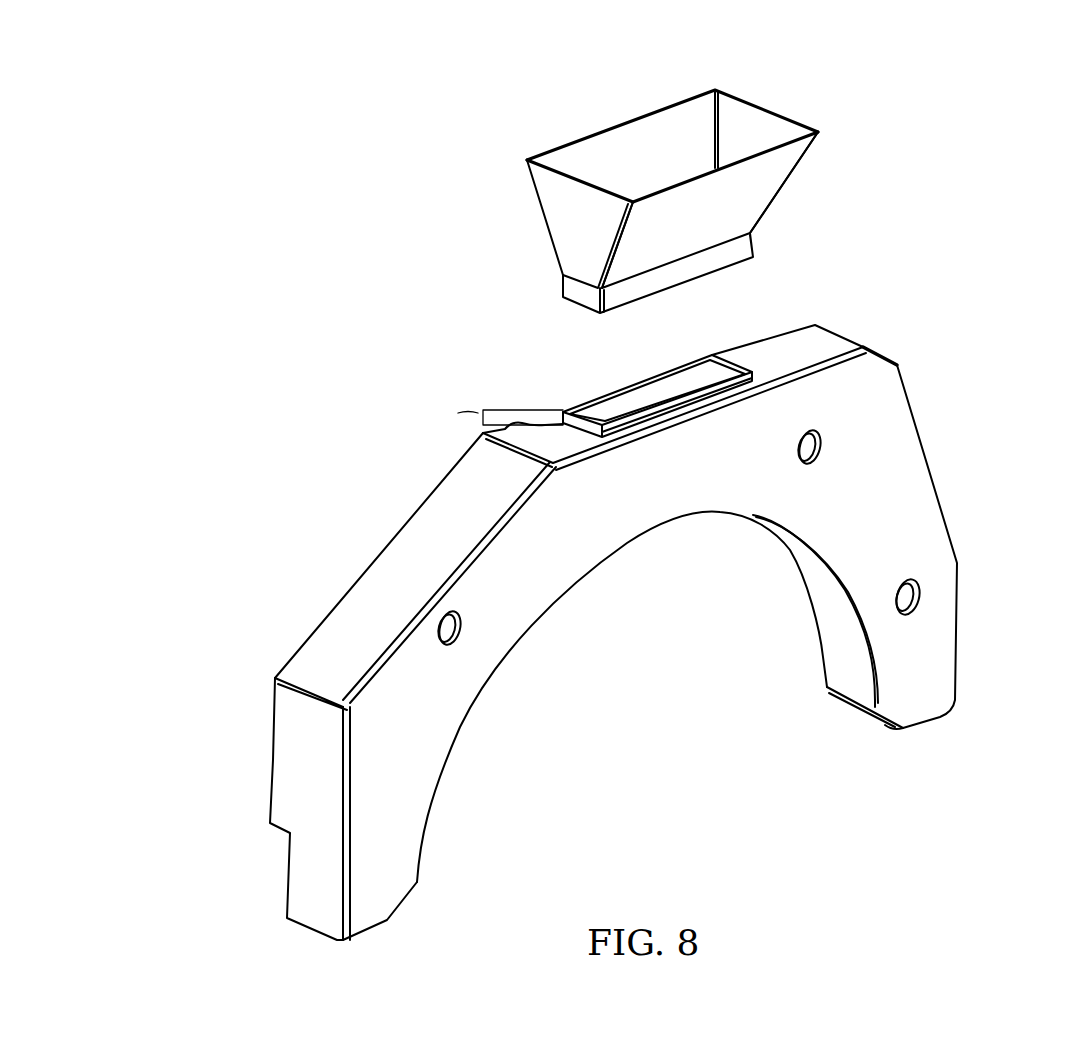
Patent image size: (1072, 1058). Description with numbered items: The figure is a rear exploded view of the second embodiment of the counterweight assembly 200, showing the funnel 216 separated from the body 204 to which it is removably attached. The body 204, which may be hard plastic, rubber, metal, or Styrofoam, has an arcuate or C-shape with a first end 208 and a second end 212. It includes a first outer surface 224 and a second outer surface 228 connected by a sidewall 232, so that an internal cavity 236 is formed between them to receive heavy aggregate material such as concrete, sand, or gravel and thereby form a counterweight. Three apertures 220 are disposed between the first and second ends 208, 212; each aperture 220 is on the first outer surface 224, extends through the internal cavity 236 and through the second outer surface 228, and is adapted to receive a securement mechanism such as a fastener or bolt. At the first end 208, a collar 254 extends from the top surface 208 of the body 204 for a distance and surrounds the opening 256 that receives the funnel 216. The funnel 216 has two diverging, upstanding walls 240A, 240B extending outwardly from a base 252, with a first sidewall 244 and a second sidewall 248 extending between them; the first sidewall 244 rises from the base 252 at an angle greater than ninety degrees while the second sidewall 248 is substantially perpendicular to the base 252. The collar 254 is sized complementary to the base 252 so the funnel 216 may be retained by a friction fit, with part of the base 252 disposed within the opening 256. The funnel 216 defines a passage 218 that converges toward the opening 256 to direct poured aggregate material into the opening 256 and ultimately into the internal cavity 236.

The counterweight assembly 200 is at (256, 198).
The body 204 is at (951, 462).
The first end 208 is at (832, 346).
The second end 212 is at (373, 928).
The funnel 216 is at (749, 81).
The passage 218 is at (597, 163).
The aperture 220 is at (460, 617).
The first outer surface 224 is at (423, 503).
The second outer surface 228 is at (403, 822).
The sidewall 232 is at (383, 598).
The internal cavity 236 is at (708, 372).
The upstanding wall 240A is at (728, 236).
The upstanding wall 240B is at (678, 118).
The first sidewall 244 is at (783, 128).
The second sidewall 248 is at (563, 222).
The base 252 is at (740, 247).
The collar 254 is at (613, 395).
The opening 256 is at (673, 360).